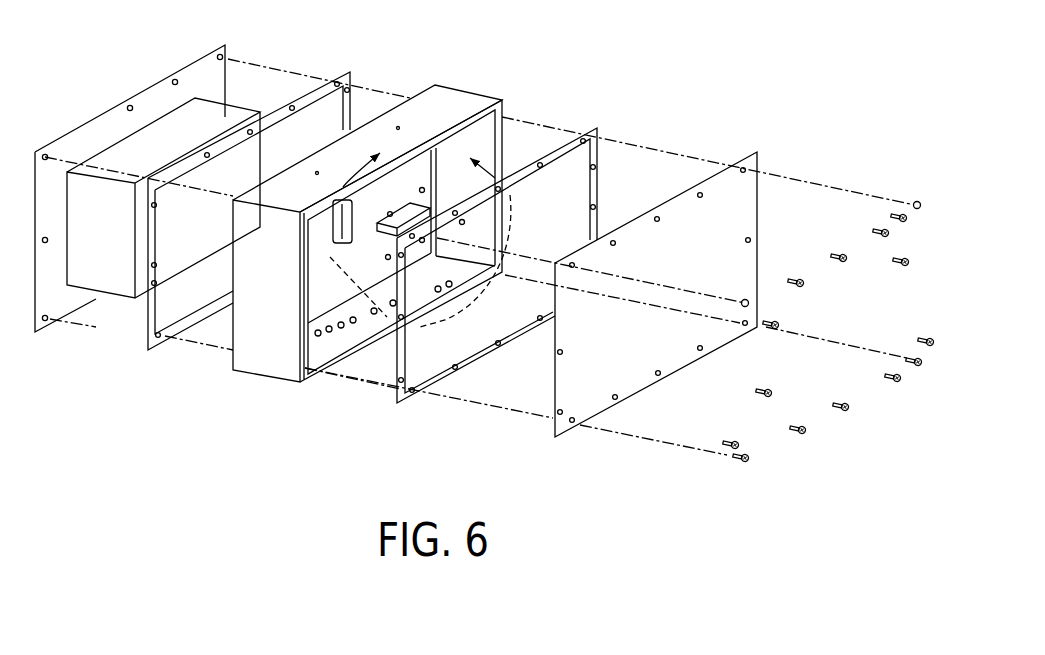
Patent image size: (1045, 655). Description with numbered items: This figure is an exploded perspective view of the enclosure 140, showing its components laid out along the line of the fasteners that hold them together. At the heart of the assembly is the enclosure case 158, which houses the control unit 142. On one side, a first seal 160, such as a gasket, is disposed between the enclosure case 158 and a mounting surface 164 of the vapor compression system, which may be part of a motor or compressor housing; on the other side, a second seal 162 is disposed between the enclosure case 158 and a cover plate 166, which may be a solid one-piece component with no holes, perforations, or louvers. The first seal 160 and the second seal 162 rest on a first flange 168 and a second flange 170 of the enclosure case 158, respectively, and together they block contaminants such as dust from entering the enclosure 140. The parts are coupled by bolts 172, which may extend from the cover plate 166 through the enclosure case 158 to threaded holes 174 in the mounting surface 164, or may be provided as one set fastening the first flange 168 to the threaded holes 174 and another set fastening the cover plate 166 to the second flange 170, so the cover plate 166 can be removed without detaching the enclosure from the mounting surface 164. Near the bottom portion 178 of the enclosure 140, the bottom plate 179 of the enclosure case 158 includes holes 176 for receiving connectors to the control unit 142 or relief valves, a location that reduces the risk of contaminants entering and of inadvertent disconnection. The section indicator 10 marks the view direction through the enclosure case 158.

The section view indicator 10 is at (419, 156).
The enclosure 140 is at (620, 51).
The control unit 142 is at (232, 107).
The enclosure case 158 is at (401, 254).
The first seal 160 is at (364, 100).
The second seal 162 is at (598, 129).
The mounting surface 164 is at (147, 167).
The cover plate 166 is at (758, 154).
The first flange 168 is at (300, 307).
The second flange 170 is at (310, 385).
The bolts 172 is at (806, 432).
The threaded holes 174 is at (128, 106).
The holes 176 is at (429, 338).
The bottom portion 178 is at (348, 416).
The bottom plate 179 is at (457, 271).